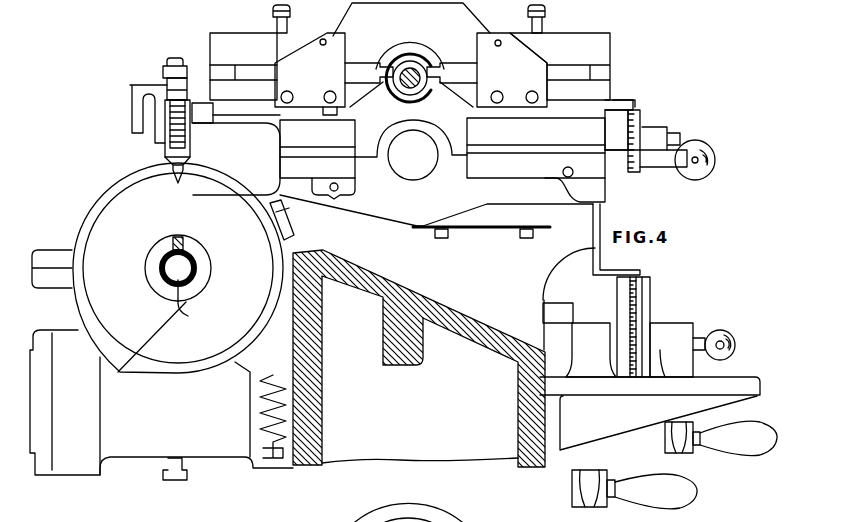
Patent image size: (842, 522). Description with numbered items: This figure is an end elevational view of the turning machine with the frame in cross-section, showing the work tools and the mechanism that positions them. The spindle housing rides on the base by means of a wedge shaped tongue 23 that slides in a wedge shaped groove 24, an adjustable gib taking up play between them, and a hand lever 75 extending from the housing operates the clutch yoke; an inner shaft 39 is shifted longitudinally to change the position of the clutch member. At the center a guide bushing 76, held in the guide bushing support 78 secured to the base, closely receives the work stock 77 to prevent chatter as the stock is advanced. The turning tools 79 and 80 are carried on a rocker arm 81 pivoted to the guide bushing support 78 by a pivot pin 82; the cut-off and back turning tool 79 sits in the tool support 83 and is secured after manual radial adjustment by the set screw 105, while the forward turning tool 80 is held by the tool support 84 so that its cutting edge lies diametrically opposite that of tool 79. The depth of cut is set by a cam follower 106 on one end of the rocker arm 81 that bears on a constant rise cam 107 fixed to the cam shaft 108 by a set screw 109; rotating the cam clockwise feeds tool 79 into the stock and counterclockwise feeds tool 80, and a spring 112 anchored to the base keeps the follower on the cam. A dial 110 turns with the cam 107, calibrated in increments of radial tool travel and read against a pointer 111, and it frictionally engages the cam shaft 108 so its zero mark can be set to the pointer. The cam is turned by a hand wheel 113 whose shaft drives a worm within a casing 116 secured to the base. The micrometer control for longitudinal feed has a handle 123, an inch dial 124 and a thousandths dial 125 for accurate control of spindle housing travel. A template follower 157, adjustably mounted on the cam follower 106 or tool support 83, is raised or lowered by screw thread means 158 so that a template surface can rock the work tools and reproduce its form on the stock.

The wedge shaped tongue 23 is at (536, 230).
The groove 24 is at (543, 222).
The inner shaft 39 is at (700, 340).
The hand lever 75 is at (708, 152).
The guide bushing 76 is at (408, 70).
The work stock 77 is at (422, 87).
The guide bushing support 78 is at (485, 25).
The turning tool 79 is at (362, 67).
The forward turning tool 80 is at (458, 65).
The rocker arm 81 is at (368, 215).
The pivot pin 82 is at (427, 168).
The tool support 83 is at (223, 42).
The tool support 84 is at (592, 42).
The set screw 105 is at (290, 12).
The cam follower 106 is at (190, 150).
The constant rise cam 107 is at (90, 228).
The cam shaft 108 is at (188, 316).
The set screw 109 is at (195, 224).
The dial 110 is at (110, 190).
The pointer 111 is at (293, 223).
The spring 112 is at (258, 405).
The hand wheel 113 is at (653, 502).
The casing 116 is at (73, 468).
The handle 123 is at (753, 445).
The inch dial 124 is at (637, 290).
The thousandths dial 125 is at (641, 303).
The template follower 157 is at (135, 103).
The screw thread means 158 is at (183, 62).